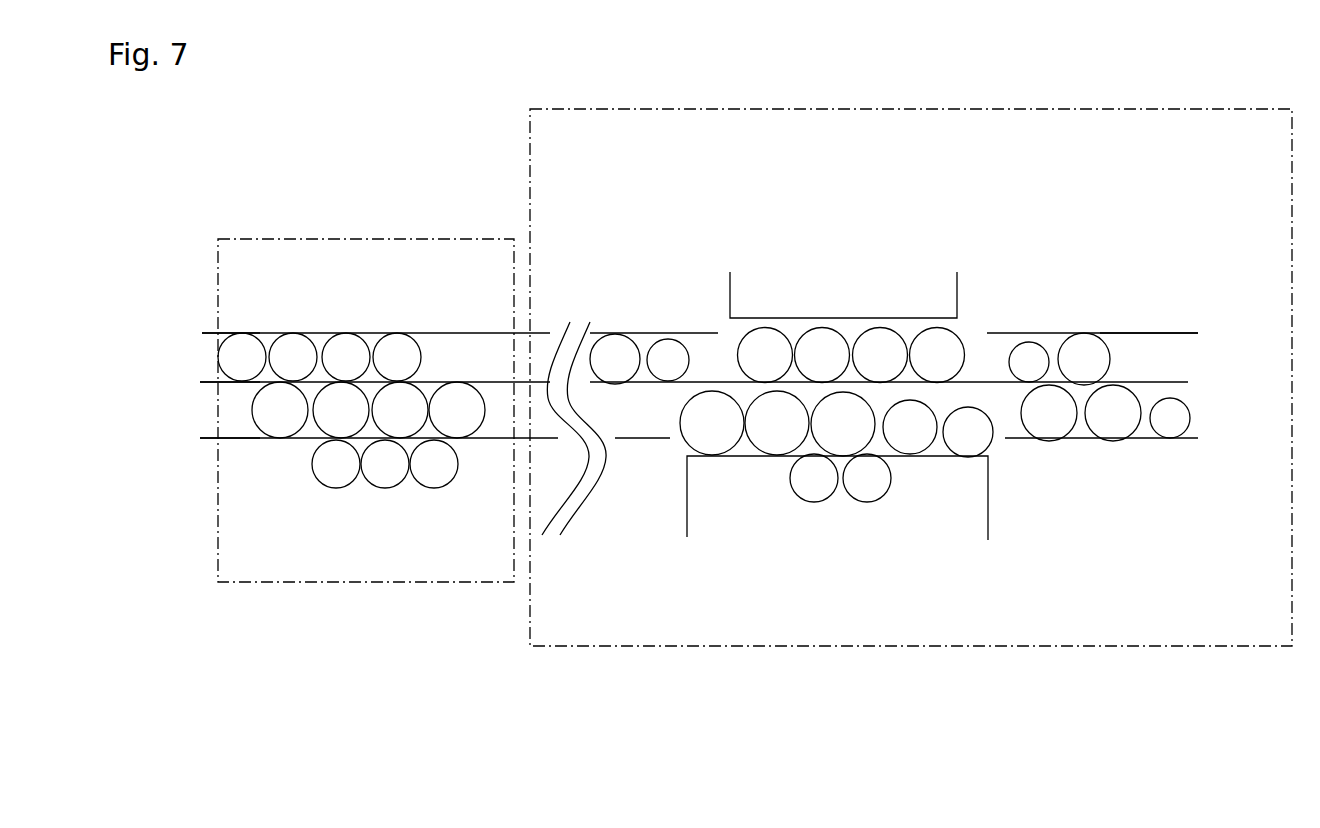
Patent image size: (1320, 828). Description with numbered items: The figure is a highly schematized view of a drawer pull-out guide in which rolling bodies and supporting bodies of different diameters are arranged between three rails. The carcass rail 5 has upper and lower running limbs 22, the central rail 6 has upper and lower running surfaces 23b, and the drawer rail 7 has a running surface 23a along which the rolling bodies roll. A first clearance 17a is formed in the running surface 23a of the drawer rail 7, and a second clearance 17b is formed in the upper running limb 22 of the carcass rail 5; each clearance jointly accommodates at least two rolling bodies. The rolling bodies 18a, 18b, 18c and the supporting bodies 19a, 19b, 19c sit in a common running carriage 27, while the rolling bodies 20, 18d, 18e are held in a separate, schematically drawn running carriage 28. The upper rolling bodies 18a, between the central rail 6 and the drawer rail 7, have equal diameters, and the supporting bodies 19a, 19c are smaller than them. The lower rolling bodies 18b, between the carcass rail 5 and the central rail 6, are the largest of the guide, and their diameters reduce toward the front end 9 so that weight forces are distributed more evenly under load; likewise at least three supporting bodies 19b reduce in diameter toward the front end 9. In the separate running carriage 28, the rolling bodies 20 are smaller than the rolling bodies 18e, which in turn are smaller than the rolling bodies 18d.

The carcass rail 5 is at (1193, 451).
The central rail 6 is at (1204, 388).
The drawer rail 7 is at (1165, 323).
The front end 9 is at (1198, 333).
The first clearance 17a is at (956, 281).
The second clearance 17b is at (987, 526).
The upper rolling bodies 18a is at (822, 355).
The lower rolling bodies 18b is at (833, 437).
The rolling bodies 18c is at (867, 480).
The rolling bodies 18d is at (463, 393).
The rolling bodies 18e is at (434, 464).
The supporting bodies 19a is at (1083, 350).
The supporting bodies 19b is at (1050, 413).
The supporting bodies 19c is at (668, 360).
The rolling bodies 20 is at (242, 357).
The running limbs 22 is at (214, 438).
The running surface 23a is at (208, 333).
The running surfaces 23b is at (214, 382).
The running carriage 27 is at (965, 646).
The running carriage 28 is at (422, 582).